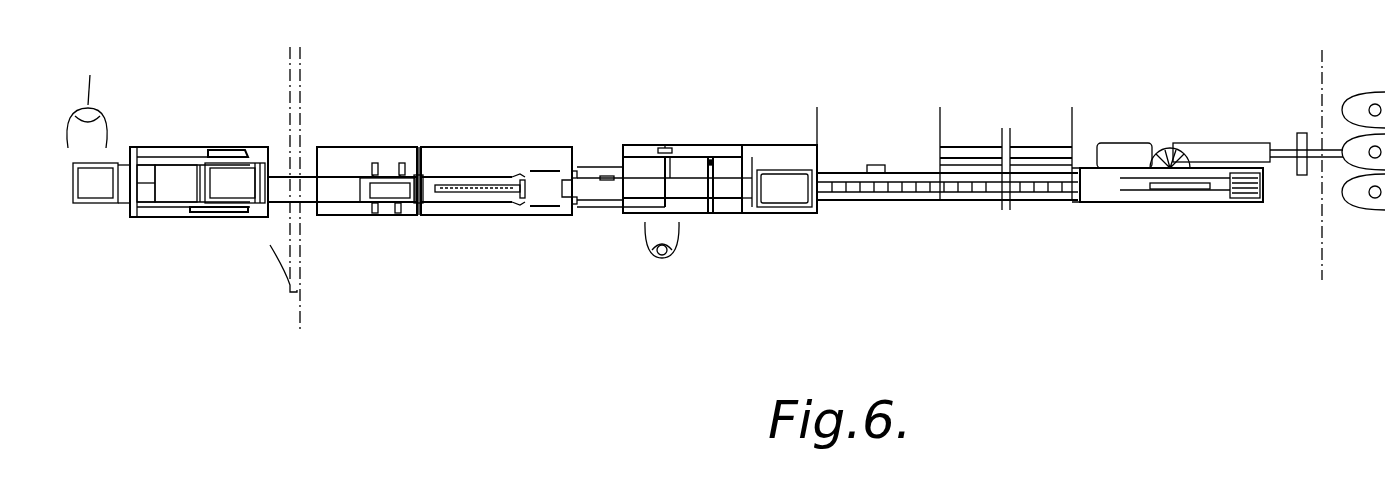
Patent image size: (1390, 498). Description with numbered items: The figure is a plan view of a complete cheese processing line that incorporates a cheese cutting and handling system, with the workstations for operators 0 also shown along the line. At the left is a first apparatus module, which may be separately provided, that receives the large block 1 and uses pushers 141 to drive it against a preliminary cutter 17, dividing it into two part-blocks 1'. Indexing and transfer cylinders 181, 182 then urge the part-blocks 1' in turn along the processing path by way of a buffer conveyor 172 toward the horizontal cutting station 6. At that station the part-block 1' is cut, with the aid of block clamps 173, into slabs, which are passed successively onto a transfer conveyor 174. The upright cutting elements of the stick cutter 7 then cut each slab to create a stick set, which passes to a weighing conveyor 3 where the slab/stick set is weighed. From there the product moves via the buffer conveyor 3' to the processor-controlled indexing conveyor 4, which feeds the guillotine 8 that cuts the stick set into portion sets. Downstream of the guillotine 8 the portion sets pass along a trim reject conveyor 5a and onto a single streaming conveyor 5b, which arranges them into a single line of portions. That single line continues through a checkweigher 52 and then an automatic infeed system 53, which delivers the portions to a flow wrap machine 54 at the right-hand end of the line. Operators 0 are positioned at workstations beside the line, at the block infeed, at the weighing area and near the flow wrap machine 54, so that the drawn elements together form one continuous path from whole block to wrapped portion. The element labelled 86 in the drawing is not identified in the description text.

The large block 1 is at (199, 122).
The pushers 141 is at (145, 143).
The transfer cylinder 182 is at (202, 143).
The preliminary cutter 17 is at (195, 220).
The carriage 86 is at (240, 143).
The part-blocks 1' is at (335, 188).
The indexing cylinder 181 is at (297, 300).
The buffer conveyor 172 is at (335, 193).
The block clamps 173 is at (392, 163).
The transfer conveyor 174 is at (463, 203).
The horizontal cutting station 6 is at (421, 163).
The stick cutter 7 is at (548, 175).
The weighing conveyor 3 is at (715, 216).
The buffer conveyor 3' is at (656, 134).
The indexing conveyor 4 is at (700, 213).
The guillotine 8 is at (713, 213).
The trim reject conveyor 5a is at (748, 187).
The single streaming conveyor 5b is at (782, 177).
The checkweigher 52 is at (917, 173).
The automatic infeed system 53 is at (1033, 167).
The flow wrap machine 54 is at (1160, 205).
The operators 0 is at (662, 258).